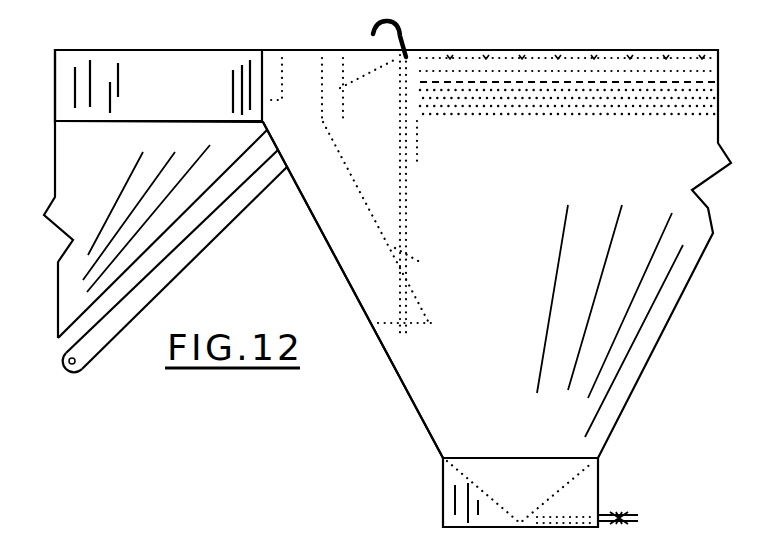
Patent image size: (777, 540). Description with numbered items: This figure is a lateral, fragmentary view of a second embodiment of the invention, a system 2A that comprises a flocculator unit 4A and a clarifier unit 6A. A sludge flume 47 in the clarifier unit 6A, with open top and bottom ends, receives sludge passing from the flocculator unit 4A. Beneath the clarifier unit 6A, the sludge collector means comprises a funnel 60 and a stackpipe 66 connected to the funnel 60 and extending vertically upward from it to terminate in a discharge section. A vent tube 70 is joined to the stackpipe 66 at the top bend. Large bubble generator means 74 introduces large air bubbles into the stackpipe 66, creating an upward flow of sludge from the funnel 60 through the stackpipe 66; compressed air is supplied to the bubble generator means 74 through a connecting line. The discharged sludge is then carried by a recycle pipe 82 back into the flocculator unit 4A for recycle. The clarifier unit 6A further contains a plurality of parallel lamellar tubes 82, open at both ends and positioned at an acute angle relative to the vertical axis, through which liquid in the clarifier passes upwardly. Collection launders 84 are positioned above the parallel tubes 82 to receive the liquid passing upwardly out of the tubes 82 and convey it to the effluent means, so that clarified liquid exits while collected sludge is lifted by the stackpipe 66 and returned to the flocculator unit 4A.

The system 2A is at (516, 49).
The flocculator unit 4A is at (133, 74).
The clarifier unit 6A is at (469, 61).
The vent tube 70 is at (432, 31).
The collection launders 84 is at (595, 57).
The parallel (lamellar) tubes 82 is at (535, 97).
The sludge flume 47 is at (335, 206).
The stackpipe 66 is at (403, 162).
The large bubble generator means 74 is at (413, 265).
The funnel 60 is at (403, 343).